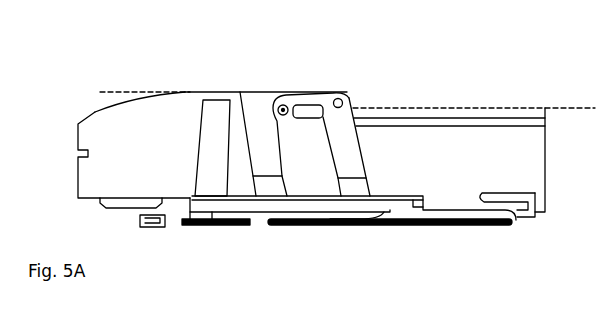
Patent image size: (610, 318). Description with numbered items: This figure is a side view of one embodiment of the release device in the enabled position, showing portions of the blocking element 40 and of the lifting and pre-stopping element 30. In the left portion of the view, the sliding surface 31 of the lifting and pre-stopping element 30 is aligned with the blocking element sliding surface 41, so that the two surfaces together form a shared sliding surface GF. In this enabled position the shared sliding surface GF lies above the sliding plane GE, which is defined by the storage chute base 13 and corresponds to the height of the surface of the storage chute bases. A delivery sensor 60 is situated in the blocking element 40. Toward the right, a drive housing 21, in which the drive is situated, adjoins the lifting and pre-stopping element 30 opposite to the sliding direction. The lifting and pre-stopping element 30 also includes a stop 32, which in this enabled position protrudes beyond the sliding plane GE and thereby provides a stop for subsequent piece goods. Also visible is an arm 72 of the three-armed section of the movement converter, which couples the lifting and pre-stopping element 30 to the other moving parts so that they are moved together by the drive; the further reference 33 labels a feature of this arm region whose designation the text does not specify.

The delivery sensor 60 is at (95, 112).
The shared sliding surface GF is at (100, 92).
The blocking element 40 is at (157, 130).
The blocking element sliding surface 41 is at (215, 92).
The lifting and pre-stopping element 30 is at (262, 128).
The arm 72 is at (283, 105).
The sliding surface 31 is at (317, 92).
The pivot hole 33 is at (347, 92).
The stop 32 is at (353, 97).
The storage chute base 13 is at (423, 112).
The drive housing 21 is at (493, 160).
The sliding plane GE is at (575, 108).